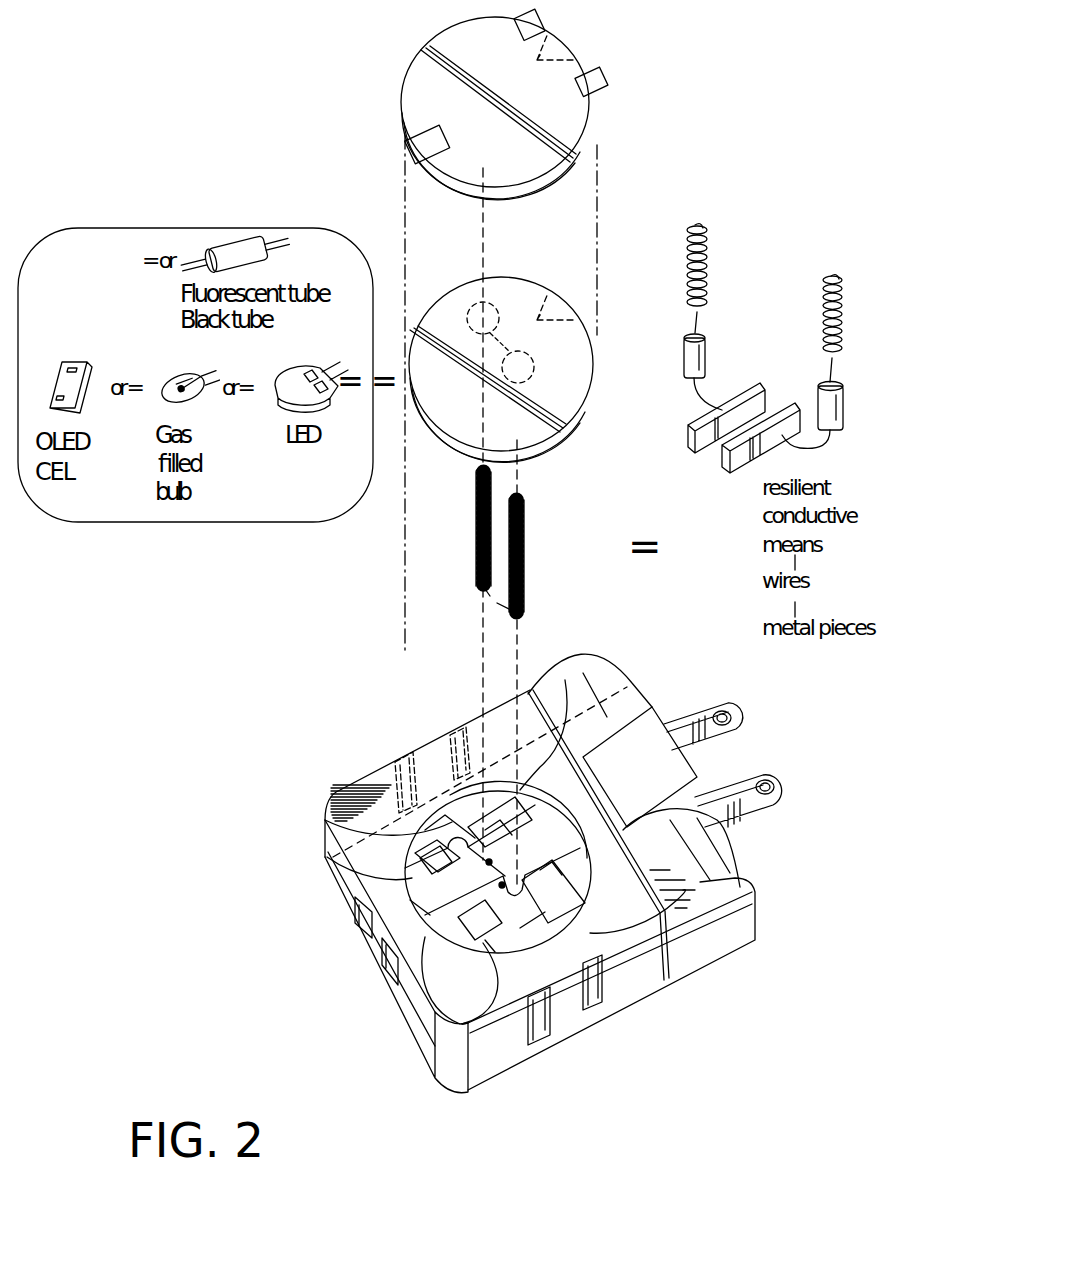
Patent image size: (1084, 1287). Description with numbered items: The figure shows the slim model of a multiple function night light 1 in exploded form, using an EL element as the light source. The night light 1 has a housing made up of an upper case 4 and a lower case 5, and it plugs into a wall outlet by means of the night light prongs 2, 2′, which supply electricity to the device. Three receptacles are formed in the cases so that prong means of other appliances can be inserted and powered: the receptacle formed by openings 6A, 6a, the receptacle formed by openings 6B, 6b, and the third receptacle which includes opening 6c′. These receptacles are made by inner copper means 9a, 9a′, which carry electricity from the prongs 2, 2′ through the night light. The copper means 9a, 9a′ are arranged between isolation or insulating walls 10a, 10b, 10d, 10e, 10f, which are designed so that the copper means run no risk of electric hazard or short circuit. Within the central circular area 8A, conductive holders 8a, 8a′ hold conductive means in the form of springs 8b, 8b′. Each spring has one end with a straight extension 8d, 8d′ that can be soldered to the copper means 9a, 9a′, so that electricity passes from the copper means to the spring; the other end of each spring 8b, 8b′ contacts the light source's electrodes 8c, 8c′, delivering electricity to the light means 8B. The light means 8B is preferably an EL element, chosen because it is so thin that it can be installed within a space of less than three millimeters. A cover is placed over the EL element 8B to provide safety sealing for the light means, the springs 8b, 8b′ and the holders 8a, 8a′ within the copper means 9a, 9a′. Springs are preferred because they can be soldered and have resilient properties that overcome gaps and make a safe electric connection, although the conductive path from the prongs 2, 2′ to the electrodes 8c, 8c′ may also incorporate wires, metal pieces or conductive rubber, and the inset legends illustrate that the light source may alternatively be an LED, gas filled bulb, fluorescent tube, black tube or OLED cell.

The multiple function night light 1 is at (593, 680).
The night light prong 2 is at (773, 779).
The night light prong 2′ is at (723, 710).
The upper case 4 is at (703, 858).
The lower case 5 is at (760, 915).
The receptacle 6a is at (595, 1010).
The receptacle 6A is at (540, 1040).
The receptacle 6b is at (358, 905).
The receptacle 6B is at (397, 970).
The receptacle 6c′ is at (400, 765).
The conductive holder 8A is at (408, 875).
The conductive holder 8a is at (552, 937).
The conductive holder 8a′ is at (435, 856).
The light means 8B is at (560, 400).
The spring 8b is at (523, 530).
The spring 8b′ is at (477, 510).
The electrode 8c is at (535, 365).
The electrode 8c′ is at (483, 300).
The straight extension 8d is at (505, 606).
The straight extension 8d′ is at (485, 592).
The copper means 9a is at (590, 900).
The copper means 9a′ is at (565, 680).
The isolation wall 10a is at (493, 942).
The isolation wall 10b is at (590, 877).
The isolation wall 10d is at (500, 807).
The isolation wall 10e is at (427, 960).
The isolation wall 10f is at (430, 1005).